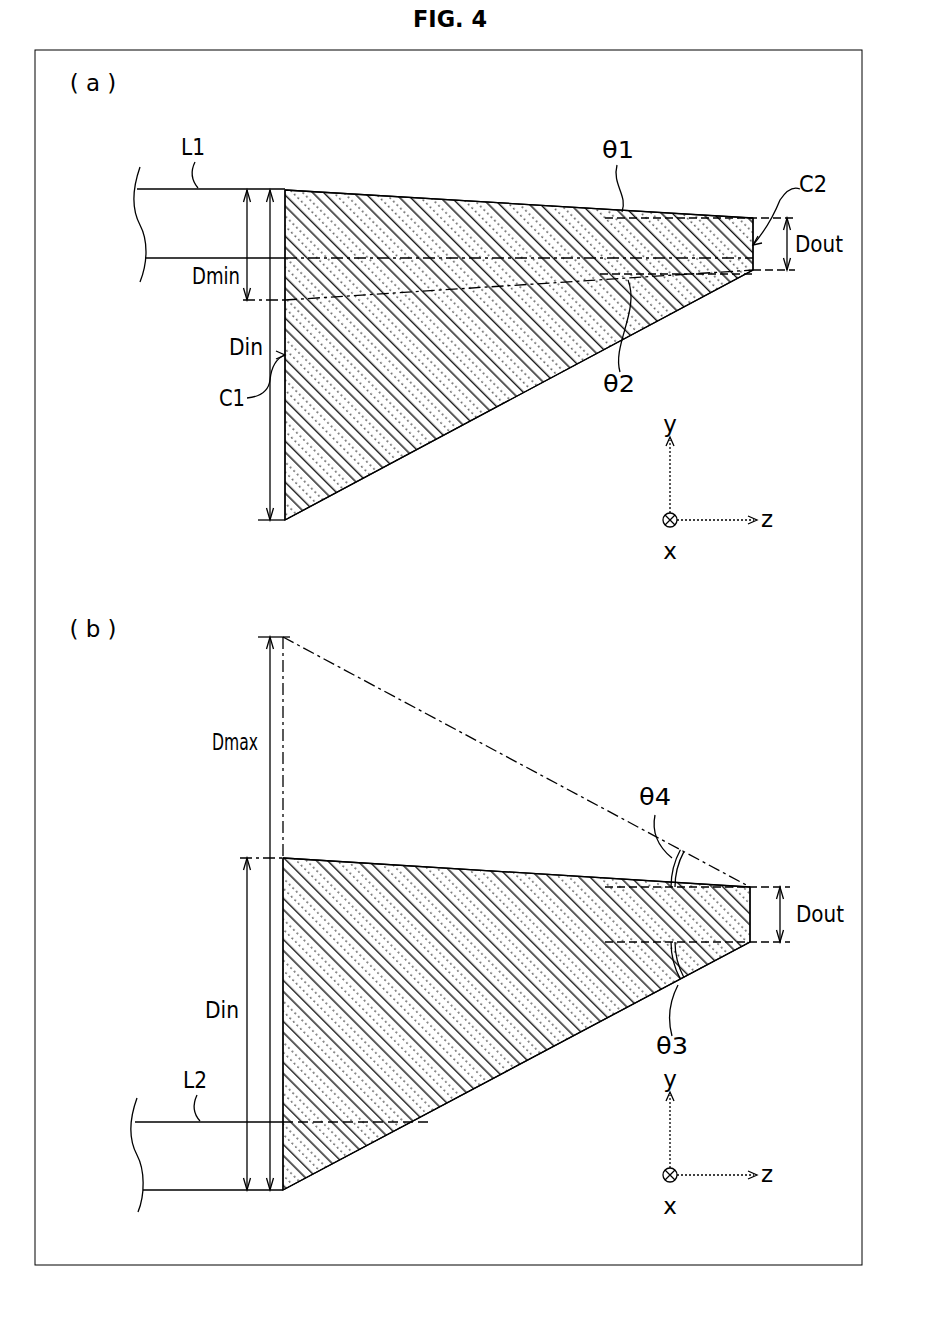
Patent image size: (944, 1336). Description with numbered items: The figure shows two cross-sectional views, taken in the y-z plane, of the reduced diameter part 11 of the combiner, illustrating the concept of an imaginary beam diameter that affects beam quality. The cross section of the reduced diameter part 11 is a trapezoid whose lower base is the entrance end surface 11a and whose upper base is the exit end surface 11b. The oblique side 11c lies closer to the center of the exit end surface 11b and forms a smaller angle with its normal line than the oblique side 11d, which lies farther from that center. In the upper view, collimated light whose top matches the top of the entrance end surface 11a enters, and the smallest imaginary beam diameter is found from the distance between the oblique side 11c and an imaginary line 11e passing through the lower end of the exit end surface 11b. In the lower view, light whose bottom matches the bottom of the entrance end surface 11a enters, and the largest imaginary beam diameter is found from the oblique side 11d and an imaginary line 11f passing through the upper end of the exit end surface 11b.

The reduced diameter part 11 is at (657, 140).
The entrance end surface 11a is at (286, 203).
The exit end surface 11b is at (753, 238).
The oblique side 11c is at (486, 199).
The oblique side 11d is at (405, 458).
The imaginary line 11e is at (523, 285).
The imaginary line 11f is at (486, 744).